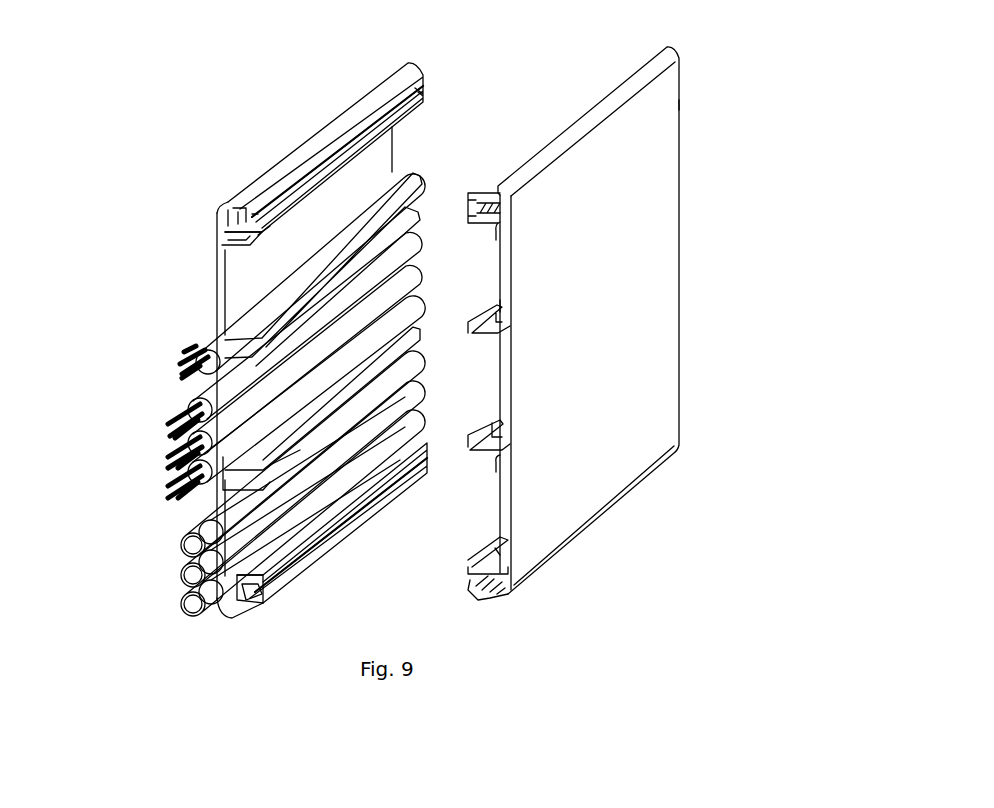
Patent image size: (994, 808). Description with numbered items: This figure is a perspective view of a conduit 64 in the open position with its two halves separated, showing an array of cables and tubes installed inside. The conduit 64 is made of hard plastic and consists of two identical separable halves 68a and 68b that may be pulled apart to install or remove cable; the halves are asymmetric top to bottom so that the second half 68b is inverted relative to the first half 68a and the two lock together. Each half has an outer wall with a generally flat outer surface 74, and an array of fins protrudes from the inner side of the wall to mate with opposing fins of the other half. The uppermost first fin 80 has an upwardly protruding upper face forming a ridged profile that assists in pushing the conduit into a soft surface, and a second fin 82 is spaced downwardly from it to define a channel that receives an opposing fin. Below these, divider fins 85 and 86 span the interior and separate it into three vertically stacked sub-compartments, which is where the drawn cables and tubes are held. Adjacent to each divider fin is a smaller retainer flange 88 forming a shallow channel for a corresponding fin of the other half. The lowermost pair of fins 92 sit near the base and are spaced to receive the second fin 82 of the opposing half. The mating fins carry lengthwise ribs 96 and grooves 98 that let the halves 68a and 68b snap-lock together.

The conduit 64 is at (678, 528).
The first half 68a is at (588, 320).
The second half 68b is at (255, 267).
The outer surface 74 is at (555, 392).
The first fin 80 is at (222, 208).
The second fin 82 is at (262, 233).
The divider fin 85 is at (248, 352).
The divider fin 86 is at (248, 463).
The retainer flange 88 is at (502, 305).
The lowermost pair of fins 92 is at (265, 585).
The mating rib 96 is at (497, 337).
The groove 98 is at (497, 226).